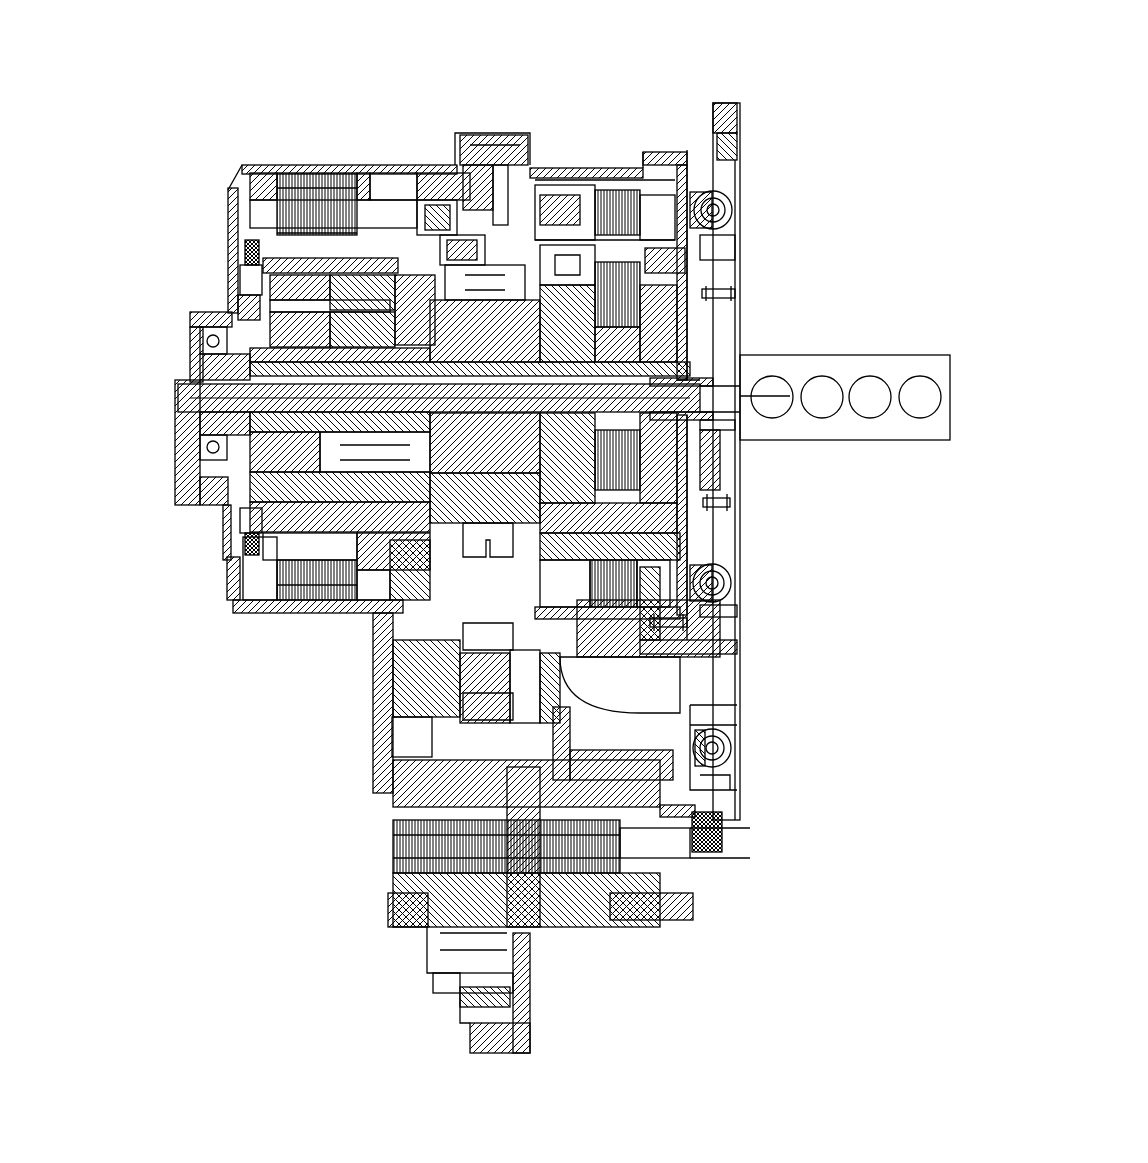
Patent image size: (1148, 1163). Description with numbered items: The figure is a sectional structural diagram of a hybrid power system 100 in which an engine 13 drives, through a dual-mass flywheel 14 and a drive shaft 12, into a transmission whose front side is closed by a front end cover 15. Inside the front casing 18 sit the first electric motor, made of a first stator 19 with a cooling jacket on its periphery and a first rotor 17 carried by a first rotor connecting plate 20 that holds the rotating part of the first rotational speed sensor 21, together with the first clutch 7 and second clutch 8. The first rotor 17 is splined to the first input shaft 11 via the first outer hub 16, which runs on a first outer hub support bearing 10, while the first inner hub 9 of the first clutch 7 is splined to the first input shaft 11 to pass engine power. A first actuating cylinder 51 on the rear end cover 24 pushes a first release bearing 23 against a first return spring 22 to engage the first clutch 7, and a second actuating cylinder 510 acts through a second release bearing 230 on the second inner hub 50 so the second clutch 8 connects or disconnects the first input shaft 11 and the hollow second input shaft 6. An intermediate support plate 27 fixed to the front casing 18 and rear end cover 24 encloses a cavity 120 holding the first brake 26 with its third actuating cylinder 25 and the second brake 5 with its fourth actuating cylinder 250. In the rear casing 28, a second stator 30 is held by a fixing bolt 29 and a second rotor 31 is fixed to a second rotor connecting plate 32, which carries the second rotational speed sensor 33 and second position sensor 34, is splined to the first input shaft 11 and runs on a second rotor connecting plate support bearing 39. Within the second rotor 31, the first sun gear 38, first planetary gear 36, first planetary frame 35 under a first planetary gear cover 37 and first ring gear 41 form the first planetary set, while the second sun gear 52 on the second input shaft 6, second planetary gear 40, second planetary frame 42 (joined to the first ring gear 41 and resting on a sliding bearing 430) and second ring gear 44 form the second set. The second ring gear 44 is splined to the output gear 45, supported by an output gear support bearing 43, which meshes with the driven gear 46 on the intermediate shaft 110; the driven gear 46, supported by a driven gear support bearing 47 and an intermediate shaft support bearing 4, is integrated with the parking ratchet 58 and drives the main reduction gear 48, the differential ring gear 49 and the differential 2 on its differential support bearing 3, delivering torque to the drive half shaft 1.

The power system 100 is at (908, 31).
The intermediate shaft 110 is at (505, 640).
The cavity 120 is at (395, 300).
The second release bearing 230 is at (683, 392).
The fourth actuating cylinder 250 is at (398, 312).
The sliding bearing 430 is at (395, 520).
The second actuating cylinder 510 is at (683, 404).
The drive half shaft 1 is at (650, 892).
The differential 2 is at (650, 833).
The differential support bearing 3 is at (727, 815).
The intermediate shaft support bearing 4 is at (742, 738).
The second brake 5 is at (723, 653).
The second input shaft 6 is at (733, 625).
The first clutch 7 is at (723, 613).
The second clutch 8 is at (723, 580).
The first inner hub 9 is at (700, 537).
The first outer hub support bearing 10 is at (720, 507).
The first input shaft 11 is at (723, 480).
The drive shaft 12 is at (745, 448).
The engine 13 is at (757, 373).
The dual-mass flywheel 14 is at (723, 350).
The front end cover 15 is at (720, 297).
The first outer hub 16 is at (722, 220).
The first rotor 17 is at (735, 167).
The front casing 18 is at (740, 125).
The first stator 19 is at (635, 150).
The first rotor connecting plate 20 is at (605, 185).
The first rotational speed sensor 21 is at (575, 185).
The first return spring 22 is at (540, 205).
The first release bearing 23 is at (490, 135).
The rear end cover 24 is at (460, 250).
The third actuating cylinder 25 is at (425, 225).
The first brake 26 is at (370, 215).
The intermediate support plate 27 is at (310, 190).
The rear casing 28 is at (395, 258).
The fixing bolt 29 is at (362, 300).
The second stator 30 is at (332, 330).
The second rotor 31 is at (302, 345).
The second rotor connecting plate 32 is at (287, 312).
The second rotational speed sensor 33 is at (270, 330).
The second position sensor 34 is at (255, 345).
The first planetary frame 35 is at (247, 300).
The first planetary gear 36 is at (203, 337).
The first planetary gear cover 37 is at (180, 384).
The first sun gear 38 is at (247, 477).
The second rotor connecting plate support bearing 39 is at (265, 460).
The second planetary gear 40 is at (290, 497).
The first ring gear 41 is at (307, 527).
The second planetary frame 42 is at (243, 540).
The output gear support bearing 43 is at (390, 560).
The second ring gear 44 is at (400, 590).
The output gear 45 is at (420, 645).
The driven gear 46 is at (380, 710).
The driven gear support bearing 47 is at (383, 733).
The main reduction gear 48 is at (390, 763).
The differential ring gear 49 is at (390, 813).
The second inner hub 50 is at (723, 257).
The first actuating cylinder 51 is at (475, 210).
The second sun gear 52 is at (265, 403).
The parking ratchet 58 is at (397, 807).